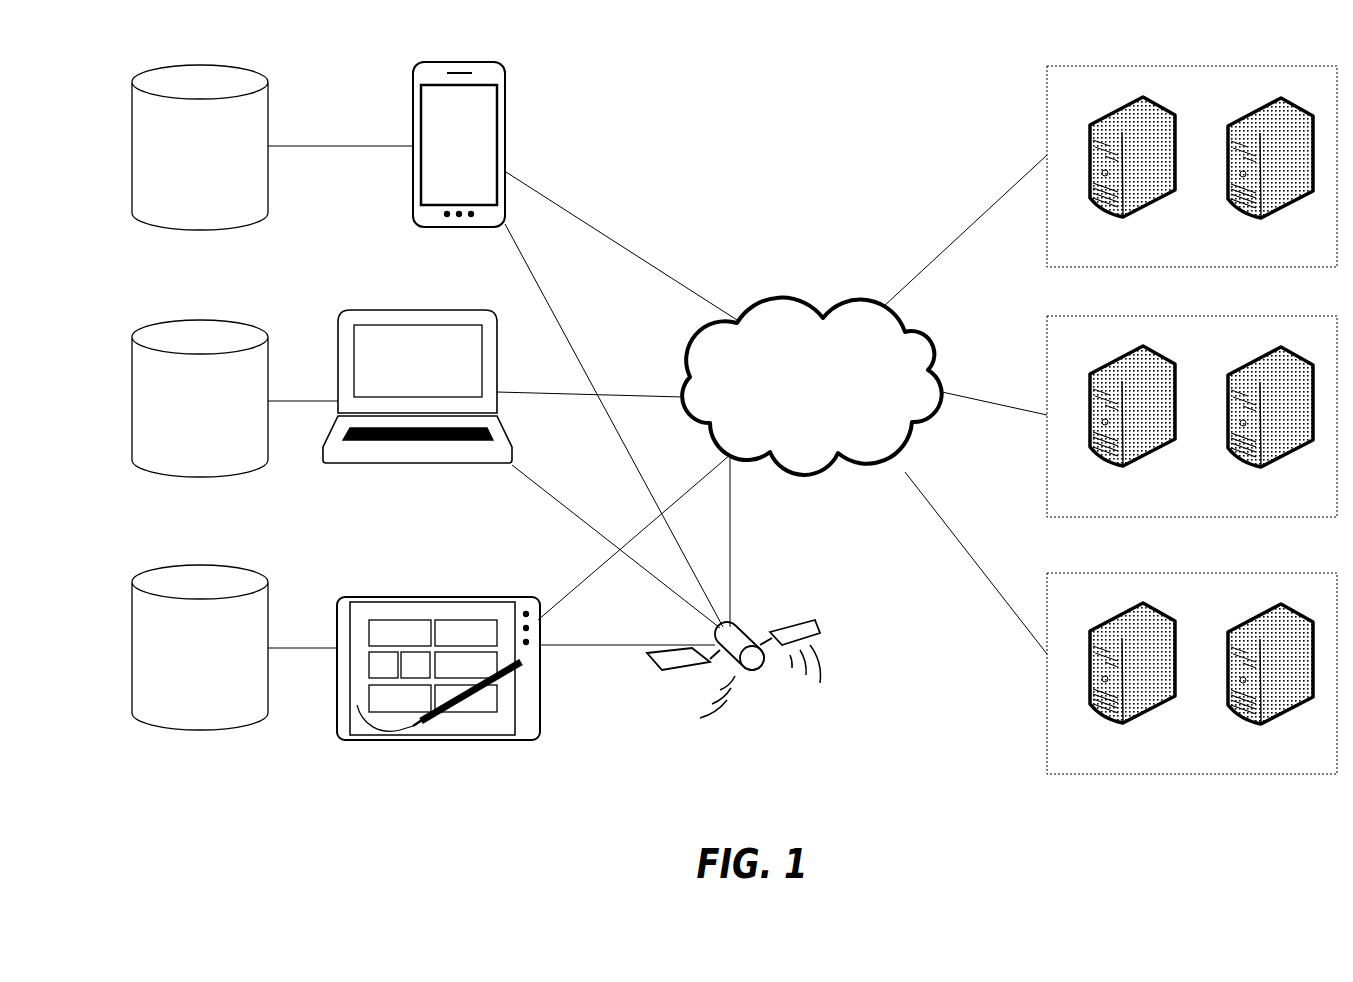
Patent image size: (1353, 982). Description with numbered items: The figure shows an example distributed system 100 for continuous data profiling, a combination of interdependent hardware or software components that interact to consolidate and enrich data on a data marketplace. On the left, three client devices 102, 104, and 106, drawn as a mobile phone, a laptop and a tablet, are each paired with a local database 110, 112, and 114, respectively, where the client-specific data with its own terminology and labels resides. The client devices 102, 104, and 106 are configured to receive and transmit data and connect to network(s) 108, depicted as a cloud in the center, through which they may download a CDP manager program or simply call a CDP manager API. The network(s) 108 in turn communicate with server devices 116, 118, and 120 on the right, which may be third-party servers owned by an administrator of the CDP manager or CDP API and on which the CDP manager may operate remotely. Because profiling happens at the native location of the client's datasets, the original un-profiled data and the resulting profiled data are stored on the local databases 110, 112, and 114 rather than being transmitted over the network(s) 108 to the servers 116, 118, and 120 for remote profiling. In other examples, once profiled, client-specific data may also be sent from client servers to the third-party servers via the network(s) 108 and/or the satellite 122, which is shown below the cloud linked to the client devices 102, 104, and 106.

The system 100 is at (830, 110).
The client device 102 is at (440, 161).
The client device 104 is at (402, 508).
The client device 106 is at (422, 793).
The network(s) 108 is at (795, 424).
The local database 110 is at (182, 157).
The local database 112 is at (182, 413).
The local database 114 is at (182, 659).
The server device 116 is at (1177, 253).
The server device 118 is at (1175, 501).
The server device 120 is at (1175, 761).
The satellite 122 is at (722, 761).